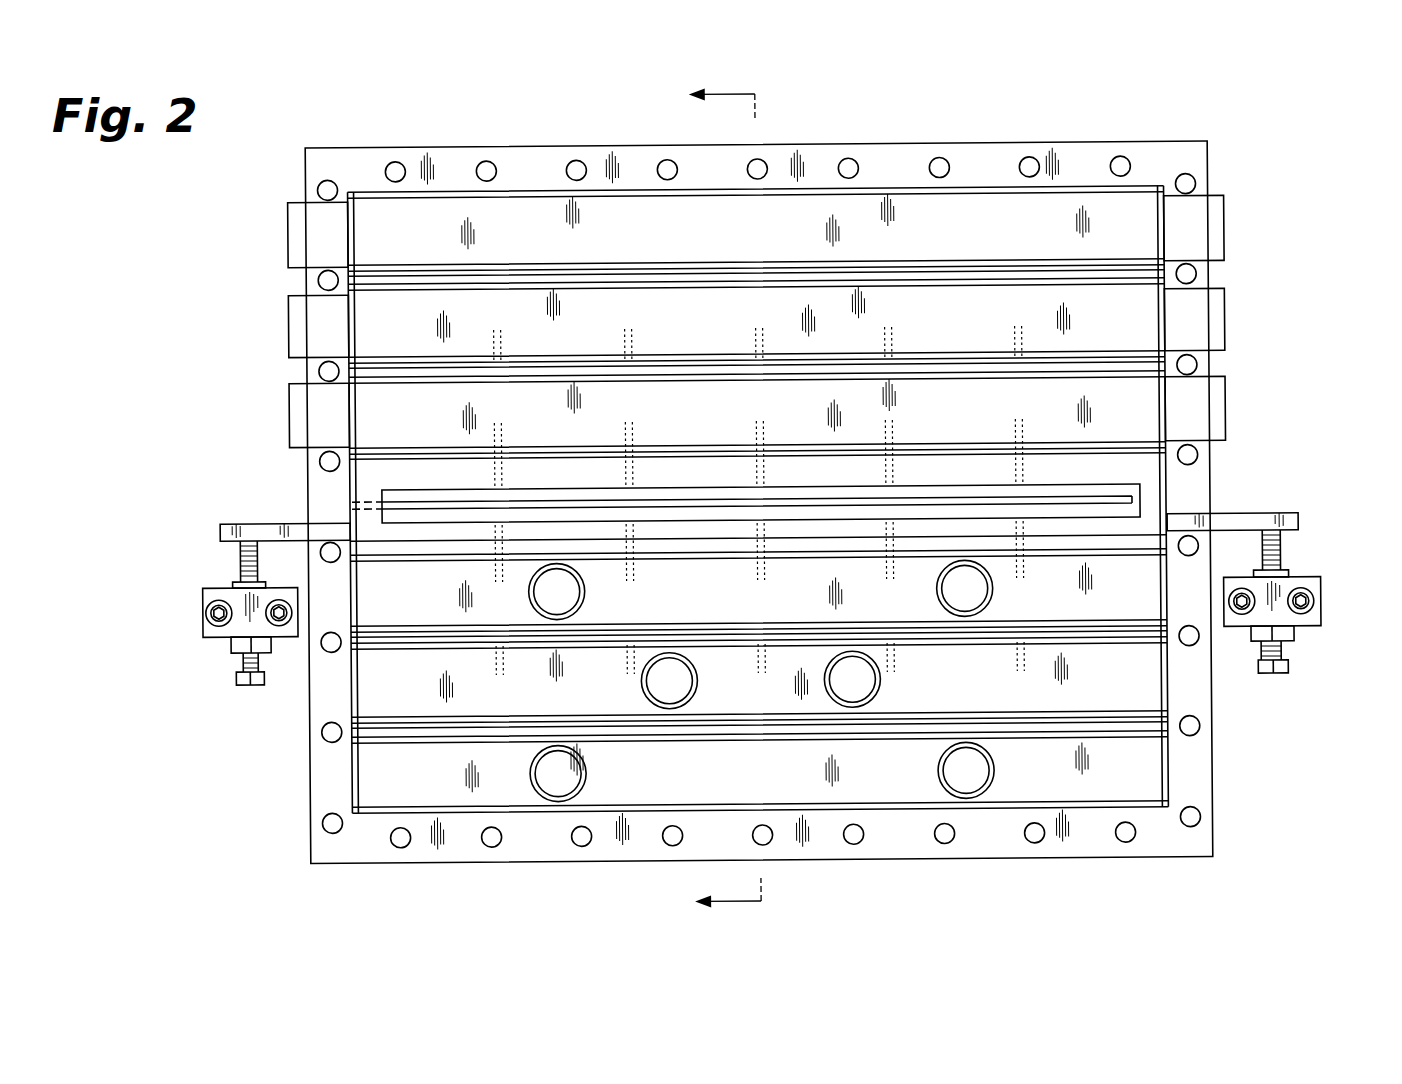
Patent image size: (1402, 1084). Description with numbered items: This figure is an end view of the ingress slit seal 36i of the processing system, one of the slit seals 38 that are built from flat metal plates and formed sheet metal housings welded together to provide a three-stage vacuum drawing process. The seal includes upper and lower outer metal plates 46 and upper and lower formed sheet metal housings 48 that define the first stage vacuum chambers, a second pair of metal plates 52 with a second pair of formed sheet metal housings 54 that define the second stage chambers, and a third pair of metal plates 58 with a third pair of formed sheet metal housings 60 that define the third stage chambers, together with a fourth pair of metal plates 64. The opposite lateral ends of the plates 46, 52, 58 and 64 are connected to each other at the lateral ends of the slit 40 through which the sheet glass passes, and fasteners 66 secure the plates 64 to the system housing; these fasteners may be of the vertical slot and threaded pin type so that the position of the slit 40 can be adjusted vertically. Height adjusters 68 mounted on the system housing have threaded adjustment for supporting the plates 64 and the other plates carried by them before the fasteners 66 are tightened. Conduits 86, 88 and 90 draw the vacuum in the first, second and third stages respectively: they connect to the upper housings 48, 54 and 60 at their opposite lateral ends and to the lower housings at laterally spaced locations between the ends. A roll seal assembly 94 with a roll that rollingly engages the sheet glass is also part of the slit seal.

The ingress slit seal 36i is at (258, 249).
The slit seal 38 is at (975, 423).
The slit 40 is at (415, 508).
The upper and lower outer metal plates 46 is at (1070, 469).
The upper and lower formed sheet metal housings 48 is at (799, 612).
The second pair of upper and lower metal plates 52 is at (1082, 366).
The second pair of formed sheet metal housings 54 is at (975, 336).
The third pair of upper and lower metal plates 58 is at (1072, 274).
The third pair of upper and lower formed sheet metal housings 60 is at (975, 248).
The fourth pair of upper and lower metal plates 64 is at (1088, 162).
The fasteners 66 is at (580, 160).
The height adjusters 68 is at (205, 579).
The conduits 86 is at (1227, 412).
The conduits 88 is at (290, 326).
The conduits 90 is at (1227, 228).
The roll seal assembly 94 is at (731, 476).